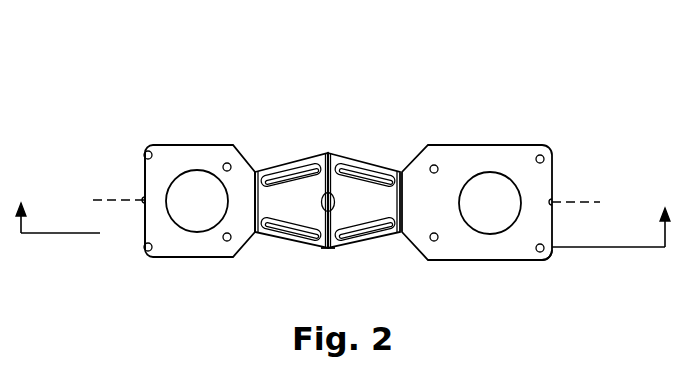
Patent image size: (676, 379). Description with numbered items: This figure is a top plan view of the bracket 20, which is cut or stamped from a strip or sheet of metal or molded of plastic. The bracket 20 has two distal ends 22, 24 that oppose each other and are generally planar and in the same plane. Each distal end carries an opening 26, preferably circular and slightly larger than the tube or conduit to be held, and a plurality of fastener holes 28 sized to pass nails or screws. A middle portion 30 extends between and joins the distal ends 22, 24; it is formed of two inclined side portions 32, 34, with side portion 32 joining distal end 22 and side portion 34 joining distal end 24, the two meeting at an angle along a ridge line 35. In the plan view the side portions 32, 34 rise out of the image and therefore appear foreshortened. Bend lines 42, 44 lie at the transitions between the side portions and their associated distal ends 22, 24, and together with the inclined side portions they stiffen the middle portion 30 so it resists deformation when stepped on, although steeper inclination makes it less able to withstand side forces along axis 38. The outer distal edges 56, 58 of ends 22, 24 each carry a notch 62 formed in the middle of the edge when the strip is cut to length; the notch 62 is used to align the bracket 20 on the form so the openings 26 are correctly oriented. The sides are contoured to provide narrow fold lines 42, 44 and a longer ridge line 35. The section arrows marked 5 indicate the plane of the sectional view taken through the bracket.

The bracket 20 is at (351, 213).
The distal end 22 is at (530, 203).
The distal end 24 is at (150, 196).
The opening 26 is at (194, 198).
The fastener hole 28 is at (227, 163).
The middle portion 30 is at (327, 199).
The side portion 32 is at (355, 198).
The side portion 34 is at (298, 203).
The ridge line 35 is at (327, 243).
The axis 38 is at (592, 202).
The bend line 42 is at (410, 170).
The bend line 44 is at (253, 233).
The distal edge 56 is at (552, 253).
The distal edge 58 is at (144, 163).
The notch 62 is at (143, 200).
The section line 5- 5 is at (341, 210).